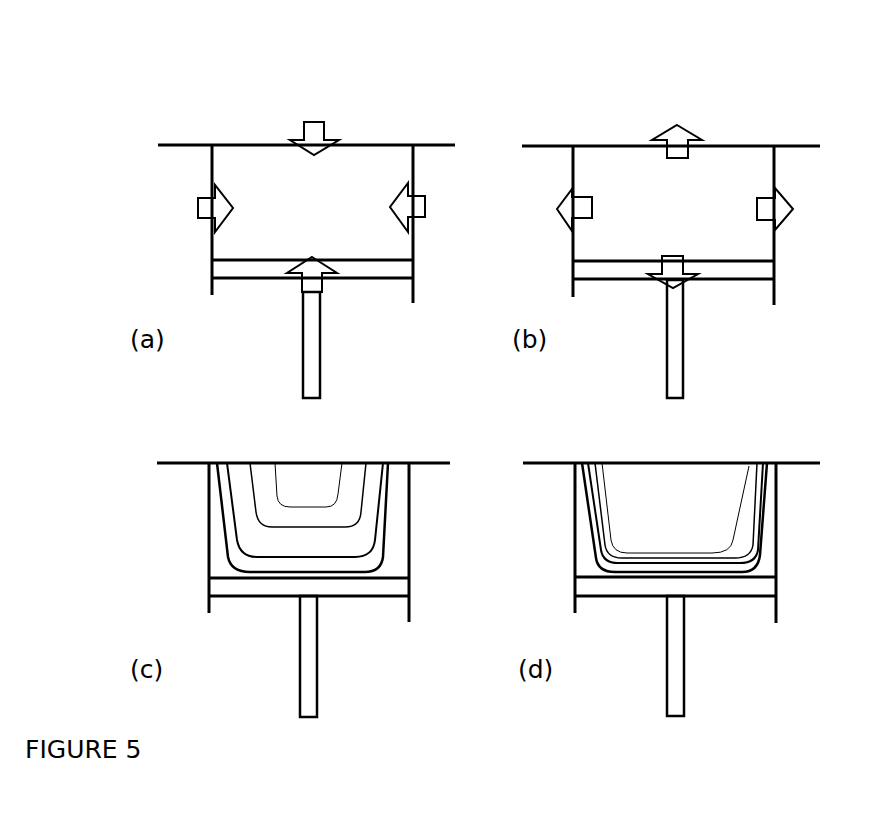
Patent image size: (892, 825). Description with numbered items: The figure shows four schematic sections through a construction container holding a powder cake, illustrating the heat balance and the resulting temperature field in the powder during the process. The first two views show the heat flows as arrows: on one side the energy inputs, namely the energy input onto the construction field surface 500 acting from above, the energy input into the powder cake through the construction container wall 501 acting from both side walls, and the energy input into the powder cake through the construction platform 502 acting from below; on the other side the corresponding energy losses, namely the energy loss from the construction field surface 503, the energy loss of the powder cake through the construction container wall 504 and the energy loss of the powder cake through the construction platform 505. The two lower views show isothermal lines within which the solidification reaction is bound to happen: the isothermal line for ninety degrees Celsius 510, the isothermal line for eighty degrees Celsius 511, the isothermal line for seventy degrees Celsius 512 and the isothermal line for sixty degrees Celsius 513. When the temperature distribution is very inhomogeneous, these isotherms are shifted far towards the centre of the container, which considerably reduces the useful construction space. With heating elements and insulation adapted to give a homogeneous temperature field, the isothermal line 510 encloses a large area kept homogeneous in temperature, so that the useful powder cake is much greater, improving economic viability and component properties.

The energy input onto the construction field surface 500 is at (307, 130).
The energy input into the powder cake through the construction container wall 501 is at (398, 207).
The energy input into the powder cake through the construction platform 502 is at (315, 277).
The energy loss from the construction field surface 503 is at (673, 145).
The energy loss of the powder cake through the construction container wall 504 is at (763, 212).
The energy loss of the powder cake through the construction platform 505 is at (675, 277).
The isothermal line in the powder cake for 90° C. 510 is at (605, 477).
The isothermal line in the powder cake for 80° C. 511 is at (598, 502).
The isothermal line in the powder cake for 70° C. 512 is at (597, 522).
The isothermal line in the powder cake for 60° C. 513 is at (592, 547).